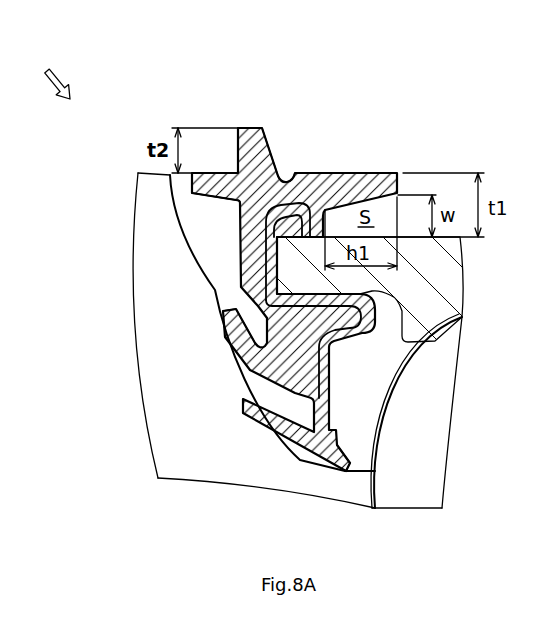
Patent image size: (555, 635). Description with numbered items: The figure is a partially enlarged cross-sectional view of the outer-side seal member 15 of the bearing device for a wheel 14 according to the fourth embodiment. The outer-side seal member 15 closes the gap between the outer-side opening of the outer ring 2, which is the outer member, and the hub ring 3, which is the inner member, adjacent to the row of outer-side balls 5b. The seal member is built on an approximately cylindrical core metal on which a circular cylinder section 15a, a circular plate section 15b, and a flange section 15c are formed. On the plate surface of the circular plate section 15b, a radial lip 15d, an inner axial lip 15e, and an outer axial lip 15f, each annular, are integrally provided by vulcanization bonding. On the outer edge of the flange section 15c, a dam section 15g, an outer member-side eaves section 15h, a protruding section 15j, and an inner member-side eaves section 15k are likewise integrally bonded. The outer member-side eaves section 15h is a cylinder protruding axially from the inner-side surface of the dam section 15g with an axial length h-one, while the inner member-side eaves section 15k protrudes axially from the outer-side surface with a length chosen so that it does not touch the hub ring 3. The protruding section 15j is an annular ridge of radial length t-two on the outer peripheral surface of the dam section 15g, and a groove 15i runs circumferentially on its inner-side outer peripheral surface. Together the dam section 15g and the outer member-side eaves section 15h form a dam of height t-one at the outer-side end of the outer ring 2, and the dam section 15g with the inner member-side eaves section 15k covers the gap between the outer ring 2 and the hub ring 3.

The bearing device for a wheel 14 is at (46, 77).
The outer-side seal member 15 is at (237, 269).
The inner member-side eaves section 15k is at (208, 173).
The protruding section 15j is at (268, 163).
The groove 15i is at (297, 173).
The outer member-side eaves section 15h is at (348, 173).
The dam section 15g is at (237, 205).
The flange section 15c is at (265, 247).
The circular cylinder section 15a is at (310, 298).
The outer axial lip 15f is at (223, 312).
The circular plate section 15b is at (317, 369).
The inner axial lip 15e is at (243, 399).
The radial lip 15d is at (326, 470).
The outer ring 2 is at (454, 286).
The outer-side balls 5b is at (438, 472).
The hub ring 3 is at (177, 472).